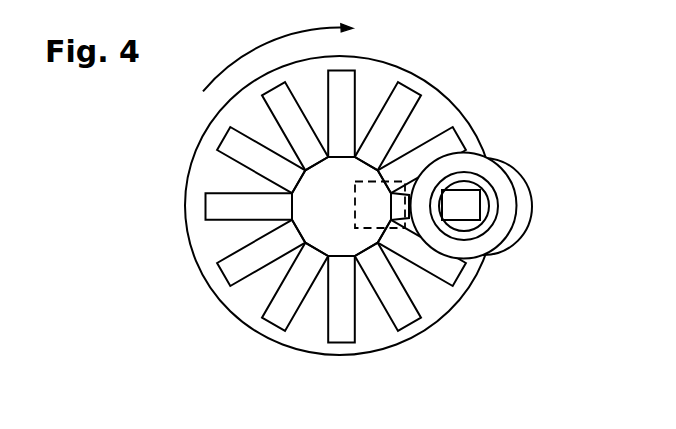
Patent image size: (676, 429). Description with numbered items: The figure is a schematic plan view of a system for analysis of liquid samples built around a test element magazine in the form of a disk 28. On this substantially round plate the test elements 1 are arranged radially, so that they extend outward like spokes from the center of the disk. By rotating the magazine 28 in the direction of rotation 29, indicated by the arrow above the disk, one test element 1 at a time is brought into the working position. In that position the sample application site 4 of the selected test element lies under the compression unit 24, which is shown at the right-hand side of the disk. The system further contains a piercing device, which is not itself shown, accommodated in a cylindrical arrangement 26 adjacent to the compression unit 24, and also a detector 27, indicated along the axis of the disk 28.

The test element 1 is at (404, 95).
The sample application site 4 is at (458, 202).
The compression unit 24 is at (508, 213).
The cylindrical arrangement 26 is at (526, 254).
The detector 27 is at (380, 208).
The magazine in the form of a disk 28 is at (302, 334).
The direction of rotation 29 is at (232, 65).